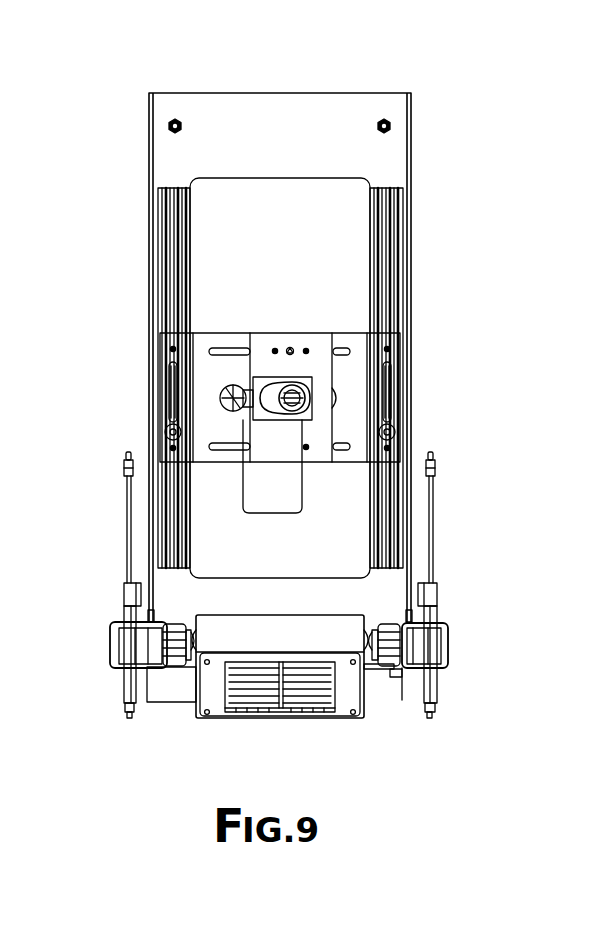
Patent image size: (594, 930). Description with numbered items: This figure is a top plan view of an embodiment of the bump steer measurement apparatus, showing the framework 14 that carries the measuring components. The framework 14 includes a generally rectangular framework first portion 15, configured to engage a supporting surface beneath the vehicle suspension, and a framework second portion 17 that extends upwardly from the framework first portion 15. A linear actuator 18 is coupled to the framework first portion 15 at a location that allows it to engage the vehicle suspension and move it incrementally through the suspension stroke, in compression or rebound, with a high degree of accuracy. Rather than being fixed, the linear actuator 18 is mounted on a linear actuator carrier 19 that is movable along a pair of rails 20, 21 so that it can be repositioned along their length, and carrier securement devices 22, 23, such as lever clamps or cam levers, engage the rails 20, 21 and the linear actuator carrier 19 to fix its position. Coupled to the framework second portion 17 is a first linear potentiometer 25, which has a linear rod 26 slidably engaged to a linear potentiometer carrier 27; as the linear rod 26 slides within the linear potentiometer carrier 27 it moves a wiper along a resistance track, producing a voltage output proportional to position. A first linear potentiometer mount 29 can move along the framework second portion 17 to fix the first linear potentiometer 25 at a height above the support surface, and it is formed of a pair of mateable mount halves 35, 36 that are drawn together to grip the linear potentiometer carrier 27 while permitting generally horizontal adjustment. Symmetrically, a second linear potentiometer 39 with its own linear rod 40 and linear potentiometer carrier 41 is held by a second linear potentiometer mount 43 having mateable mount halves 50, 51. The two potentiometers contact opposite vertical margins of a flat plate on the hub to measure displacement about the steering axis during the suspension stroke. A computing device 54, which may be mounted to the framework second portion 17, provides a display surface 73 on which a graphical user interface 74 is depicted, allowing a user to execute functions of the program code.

The framework 14 is at (411, 255).
The framework first portion 15 is at (390, 167).
The framework second portion 17 is at (373, 670).
The linear actuator 18 is at (273, 393).
The linear actuator carrier 19 is at (323, 350).
The rail 20 is at (168, 237).
The rail 21 is at (394, 210).
The carrier securement device 22 is at (167, 425).
The carrier securement device 23 is at (396, 430).
The first linear potentiometer 25 is at (124, 449).
The linear rod 26 is at (126, 500).
The linear potentiometer carrier 27 is at (128, 598).
The first linear potentiometer mount 29 is at (112, 652).
The mateable mount half 35 is at (122, 637).
The mateable mount half 36 is at (143, 652).
The second linear potentiometer 39 is at (447, 451).
The linear rod 40 is at (436, 522).
The linear potentiometer carrier 41 is at (433, 600).
The second linear potentiometer mount 43 is at (455, 631).
The mateable mount half 50 is at (418, 650).
The mateable mount half 51 is at (438, 640).
The computing device 54 is at (318, 719).
The display surface 73 is at (233, 713).
The graphical user interface 74 is at (257, 696).